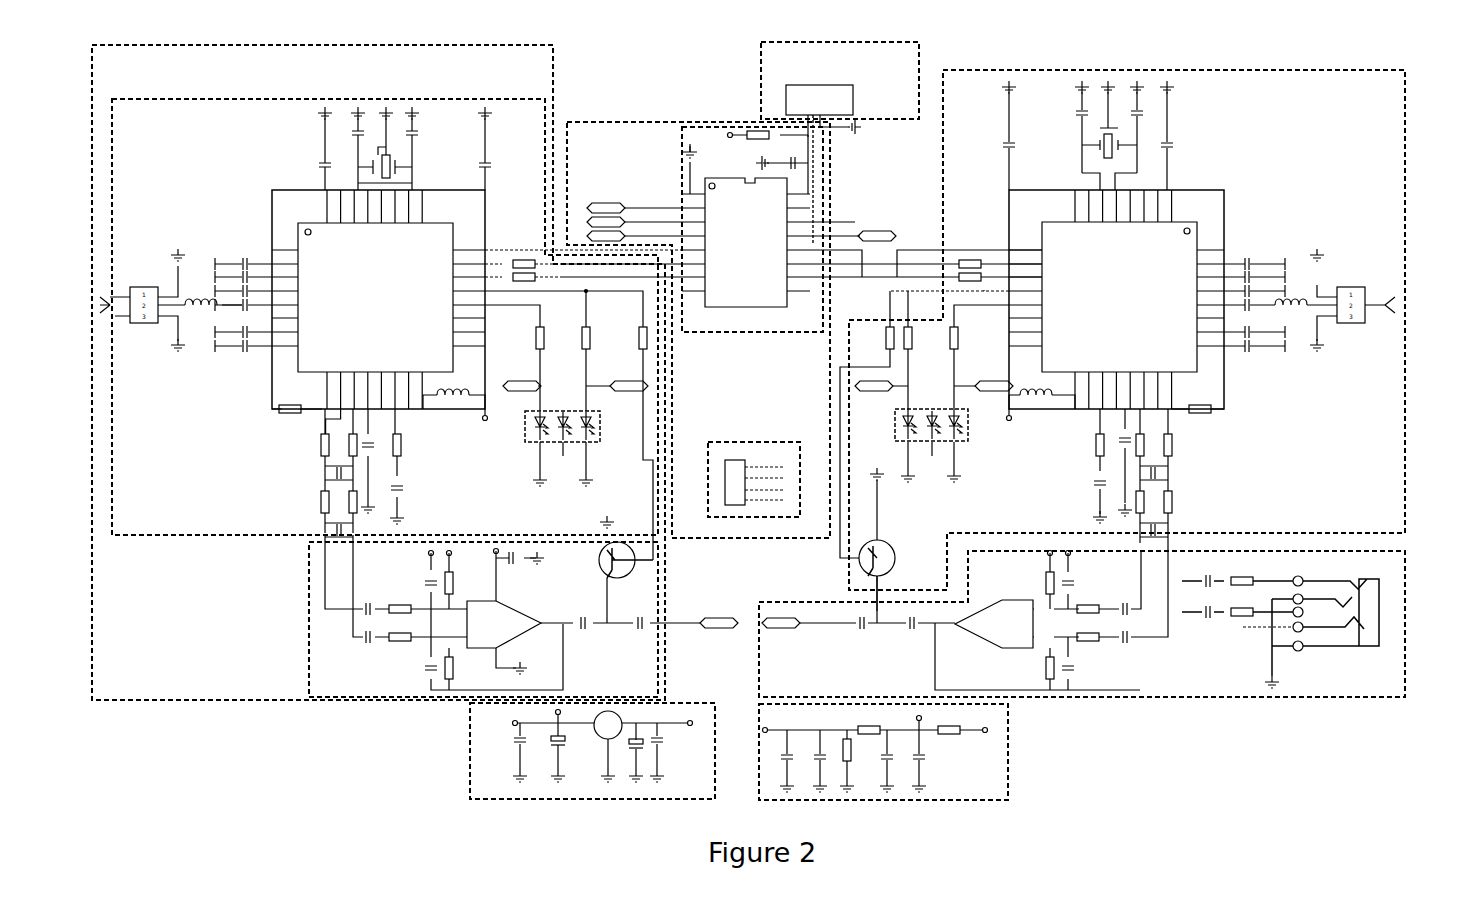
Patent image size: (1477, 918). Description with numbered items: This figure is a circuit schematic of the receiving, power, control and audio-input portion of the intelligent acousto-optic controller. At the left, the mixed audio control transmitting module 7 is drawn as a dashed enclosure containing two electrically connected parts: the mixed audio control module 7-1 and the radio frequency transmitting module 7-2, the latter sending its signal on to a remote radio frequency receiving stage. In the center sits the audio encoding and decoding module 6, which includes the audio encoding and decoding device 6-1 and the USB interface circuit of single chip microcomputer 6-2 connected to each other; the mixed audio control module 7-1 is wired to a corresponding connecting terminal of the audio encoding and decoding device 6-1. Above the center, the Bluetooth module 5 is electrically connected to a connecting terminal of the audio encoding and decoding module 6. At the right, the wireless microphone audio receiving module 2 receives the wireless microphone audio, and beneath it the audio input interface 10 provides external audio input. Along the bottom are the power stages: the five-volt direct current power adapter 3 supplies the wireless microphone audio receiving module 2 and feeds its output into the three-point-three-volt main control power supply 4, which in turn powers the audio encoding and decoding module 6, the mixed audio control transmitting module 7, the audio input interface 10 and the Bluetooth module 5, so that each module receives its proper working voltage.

The wireless microphone audio receiving module 2 is at (1405, 265).
The 5V direct current power adapter 3 is at (1005, 743).
The 3.3V main control power supply 4 is at (470, 773).
The Bluetooth module 5 is at (822, 42).
The audio encoding and decoding module 6 is at (672, 122).
The audio encoding and decoding device 6-1 is at (770, 334).
The USB interface circuit of single chip microcomputer 6-2 is at (757, 442).
The mixed audio control transmitting module 7 is at (348, 45).
The mixed audio control module 7-1 is at (309, 590).
The radio frequency transmitting module 7-2 is at (387, 99).
The audio input interface 10 is at (1405, 695).